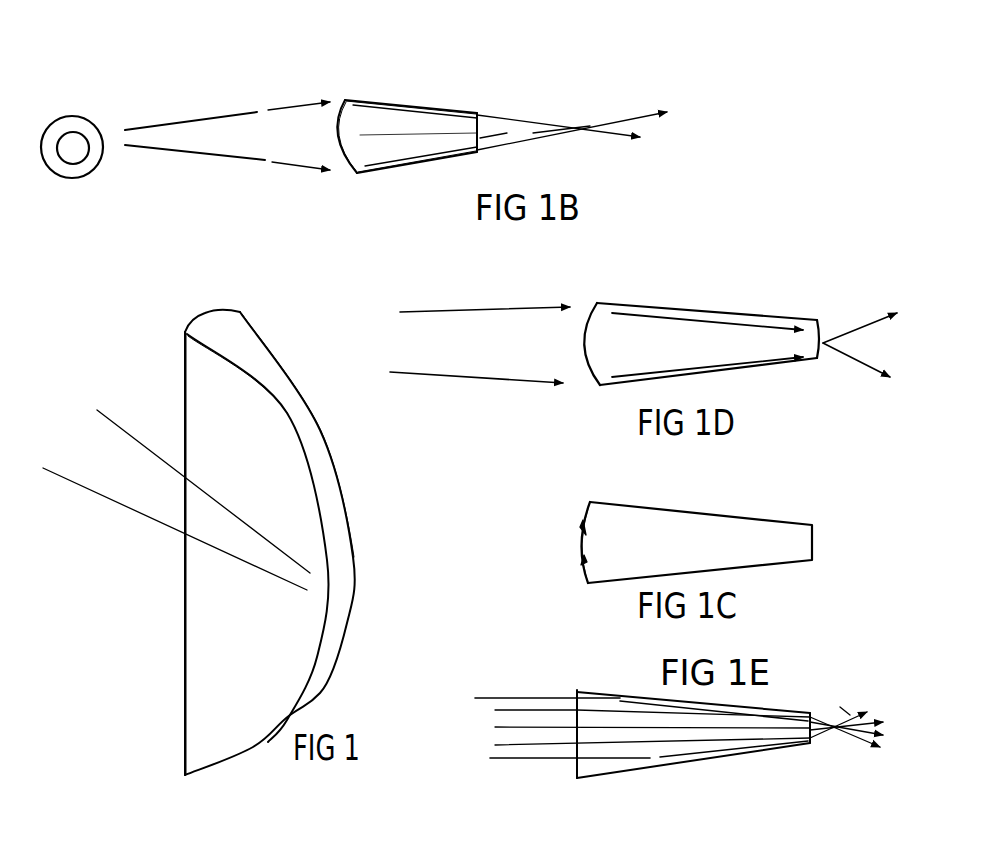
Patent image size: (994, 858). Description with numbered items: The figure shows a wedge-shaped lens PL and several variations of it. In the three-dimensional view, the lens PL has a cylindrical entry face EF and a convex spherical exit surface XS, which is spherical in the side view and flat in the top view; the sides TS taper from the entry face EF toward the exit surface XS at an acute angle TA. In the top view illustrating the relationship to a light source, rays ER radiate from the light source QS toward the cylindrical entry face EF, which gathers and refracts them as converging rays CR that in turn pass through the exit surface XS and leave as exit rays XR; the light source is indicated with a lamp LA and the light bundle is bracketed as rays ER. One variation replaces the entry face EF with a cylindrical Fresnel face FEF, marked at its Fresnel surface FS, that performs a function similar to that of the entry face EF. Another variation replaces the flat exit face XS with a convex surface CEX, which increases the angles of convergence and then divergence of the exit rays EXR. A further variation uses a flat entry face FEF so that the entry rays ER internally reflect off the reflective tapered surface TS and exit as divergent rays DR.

In FIG. 1, the wedge shaped lens PL is at (170, 658).
In FIG. 1B, the wedge shaped lens PL is at (458, 60).
In FIG. 1, the cylindrical entry face EF is at (198, 315).
In FIG. 1B, the cylindrical entry face EF is at (330, 142).
In FIG. 1, the exit surface XS is at (327, 510).
In FIG. 1B, the exit surface XS is at (480, 120).
In FIG. 1, the acute angle TA is at (143, 449).
In FIG. 1, the tapered sides TS is at (210, 583).
In FIG. 1B, the tapered sides TS is at (365, 100).
In FIG. 1E, the tapered sides TS is at (633, 698).
In FIG. 1B, the lamp LA is at (90, 157).
In FIG. 1B, the light source QS is at (72, 137).
In FIG. 1B, the rays ER is at (257, 112).
In FIG. 1E, the rays ER is at (513, 700).
In FIG. 1B, the converging rays CR is at (412, 117).
In FIG. 1B, the exit rays XR is at (650, 125).
In FIG. 1D, the convex surface CEX is at (823, 355).
In FIG. 1D, the exit rays EXR is at (872, 363).
In FIG. 1C, the front surface FS is at (583, 505).
In FIG. 1C, the Fresnel entry face FEF is at (567, 552).
In FIG. 1E, the Fresnel entry face FEF is at (572, 767).
In FIG. 1E, the divergent rays DR is at (887, 747).